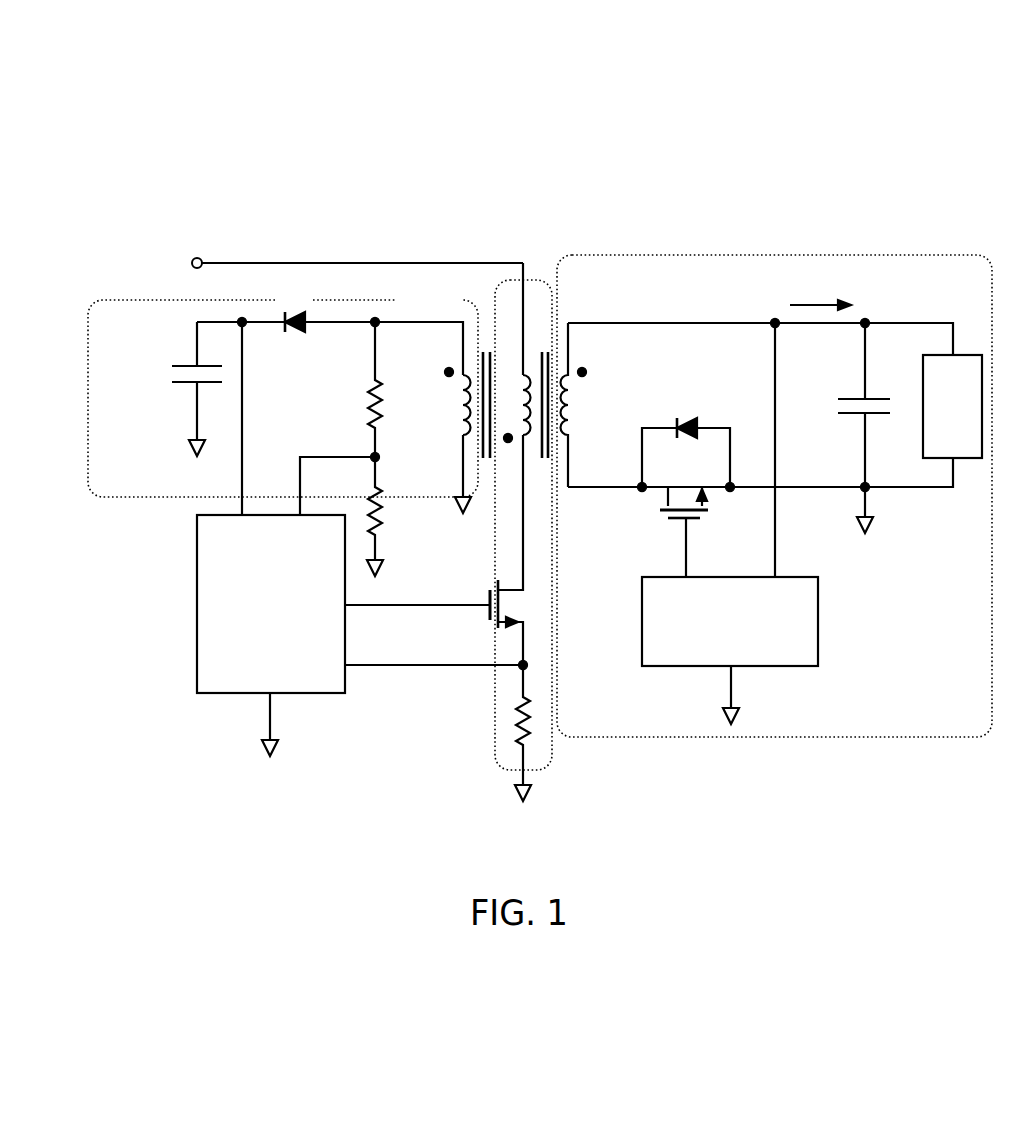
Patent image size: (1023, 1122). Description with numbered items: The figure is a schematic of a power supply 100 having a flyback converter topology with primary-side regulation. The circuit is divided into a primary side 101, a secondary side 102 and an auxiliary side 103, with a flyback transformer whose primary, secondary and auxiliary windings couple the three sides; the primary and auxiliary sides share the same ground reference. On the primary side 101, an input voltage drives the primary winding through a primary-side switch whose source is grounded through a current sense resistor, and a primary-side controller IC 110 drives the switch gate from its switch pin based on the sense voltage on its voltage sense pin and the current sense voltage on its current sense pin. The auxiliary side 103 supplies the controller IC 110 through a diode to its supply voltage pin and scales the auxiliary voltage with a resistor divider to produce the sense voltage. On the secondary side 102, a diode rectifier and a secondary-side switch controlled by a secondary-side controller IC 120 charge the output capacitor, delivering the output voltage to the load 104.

The power supply 100 is at (92, 216).
The primary side 101 is at (548, 768).
The secondary side 102 is at (862, 738).
The auxiliary side 103 is at (128, 497).
The load 104 is at (922, 388).
The primary-side controller IC 110 is at (271, 635).
The secondary-side controller IC 120 is at (730, 650).